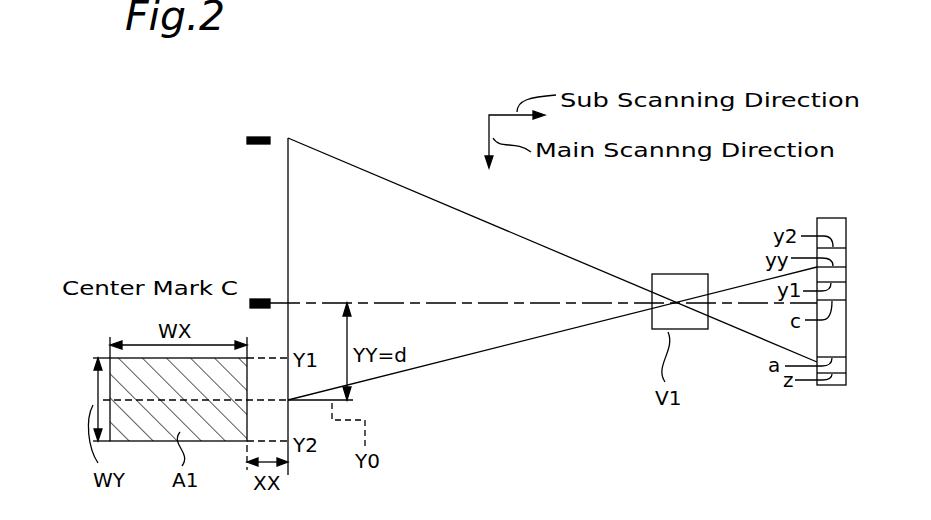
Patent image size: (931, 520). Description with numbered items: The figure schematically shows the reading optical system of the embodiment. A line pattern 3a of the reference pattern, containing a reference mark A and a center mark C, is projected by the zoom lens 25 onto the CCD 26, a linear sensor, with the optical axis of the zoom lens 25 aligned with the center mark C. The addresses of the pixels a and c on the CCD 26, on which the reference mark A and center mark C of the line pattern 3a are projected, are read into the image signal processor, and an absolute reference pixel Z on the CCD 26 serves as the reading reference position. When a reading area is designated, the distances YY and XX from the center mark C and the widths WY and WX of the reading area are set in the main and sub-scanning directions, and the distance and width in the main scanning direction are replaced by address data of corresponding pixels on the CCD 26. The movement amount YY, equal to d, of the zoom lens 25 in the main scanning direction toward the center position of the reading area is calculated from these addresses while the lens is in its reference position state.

The line pattern 3a is at (272, 125).
The zoom lens 25 is at (675, 272).
The CCD 26 is at (828, 394).